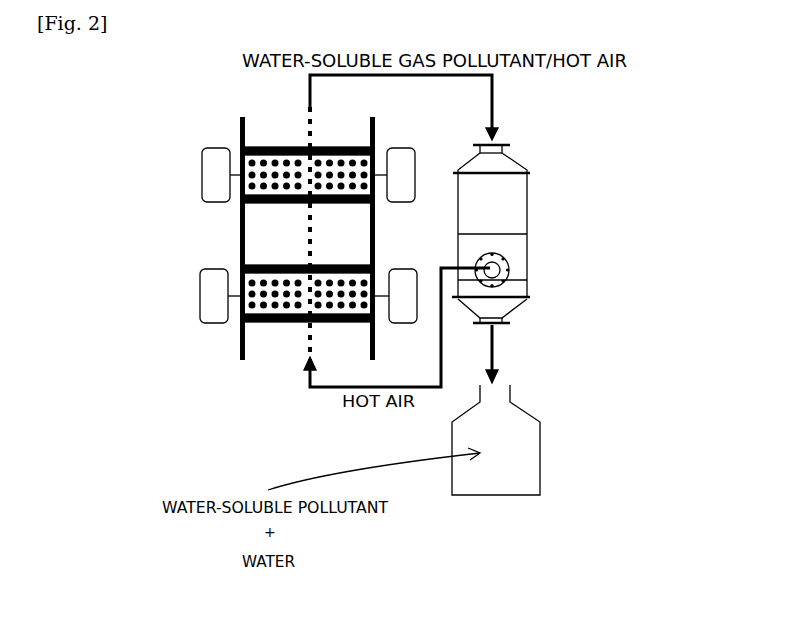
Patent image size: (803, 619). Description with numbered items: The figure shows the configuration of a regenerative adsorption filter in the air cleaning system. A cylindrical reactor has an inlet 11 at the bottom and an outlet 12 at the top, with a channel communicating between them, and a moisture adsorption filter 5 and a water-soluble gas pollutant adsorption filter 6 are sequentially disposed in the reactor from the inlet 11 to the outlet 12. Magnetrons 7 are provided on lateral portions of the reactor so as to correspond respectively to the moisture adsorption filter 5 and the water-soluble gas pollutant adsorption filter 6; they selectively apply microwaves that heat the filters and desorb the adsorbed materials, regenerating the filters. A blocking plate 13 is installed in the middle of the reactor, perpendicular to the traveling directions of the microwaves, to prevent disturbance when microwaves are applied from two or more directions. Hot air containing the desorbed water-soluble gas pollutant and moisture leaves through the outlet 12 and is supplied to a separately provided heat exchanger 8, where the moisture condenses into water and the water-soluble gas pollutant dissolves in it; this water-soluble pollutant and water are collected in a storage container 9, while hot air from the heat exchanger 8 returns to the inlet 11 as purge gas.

The moisture adsorption filter 5 is at (260, 305).
The water-soluble gas pollutant adsorption filter 6 is at (277, 162).
The magnetrons 7 is at (212, 292).
The heat exchanger 8 is at (519, 215).
The storage container 9 is at (535, 472).
The inlet 11 is at (386, 328).
The outlet 12 is at (393, 107).
The blocking plate 13 is at (305, 227).